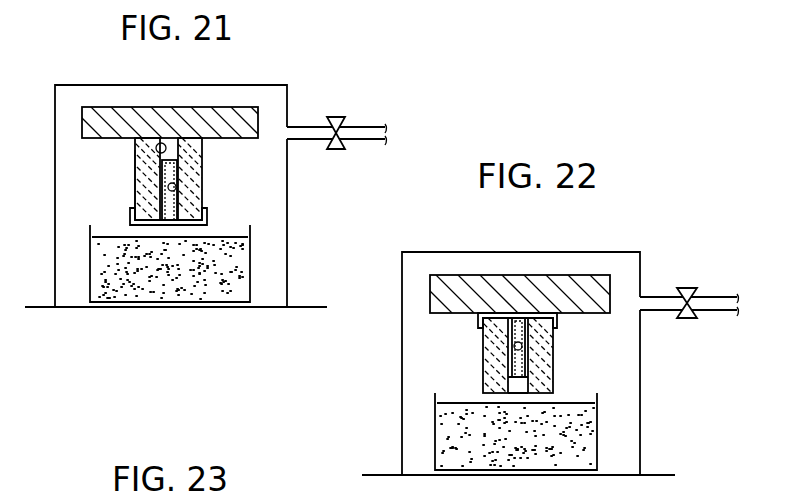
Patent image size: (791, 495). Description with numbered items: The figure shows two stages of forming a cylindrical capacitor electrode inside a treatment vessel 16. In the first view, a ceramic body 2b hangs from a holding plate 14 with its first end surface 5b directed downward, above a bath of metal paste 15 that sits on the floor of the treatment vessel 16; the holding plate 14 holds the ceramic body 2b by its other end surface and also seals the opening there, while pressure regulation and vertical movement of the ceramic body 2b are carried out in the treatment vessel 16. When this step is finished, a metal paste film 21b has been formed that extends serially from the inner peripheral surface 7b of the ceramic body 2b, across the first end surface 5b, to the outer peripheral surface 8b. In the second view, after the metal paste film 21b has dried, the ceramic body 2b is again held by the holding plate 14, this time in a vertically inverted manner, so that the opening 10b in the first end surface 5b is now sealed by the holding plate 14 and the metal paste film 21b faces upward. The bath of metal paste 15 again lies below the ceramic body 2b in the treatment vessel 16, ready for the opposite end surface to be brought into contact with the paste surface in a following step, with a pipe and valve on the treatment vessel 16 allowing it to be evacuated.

In FIG. 21, the treatment vessel 16 is at (243, 85).
In FIG. 22, the treatment vessel 16 is at (592, 252).
In FIG. 21, the holding plate 14 is at (247, 140).
In FIG. 22, the holding plate 14 is at (568, 313).
In FIG. 21, the ceramic body 2b is at (209, 157).
In FIG. 22, the ceramic body 2b is at (563, 385).
In FIG. 21, the inner peripheral surface 7b is at (156, 150).
In FIG. 21, the outer peripheral surface 8b is at (135, 172).
In FIG. 21, the metal paste film 21b is at (176, 188).
In FIG. 22, the metal paste film 21b is at (515, 347).
In FIG. 21, the first end surface 5b is at (196, 226).
In FIG. 21, the metal paste 15 is at (240, 270).
In FIG. 22, the metal paste 15 is at (480, 413).
In FIG. 22, the opening 10b is at (518, 321).